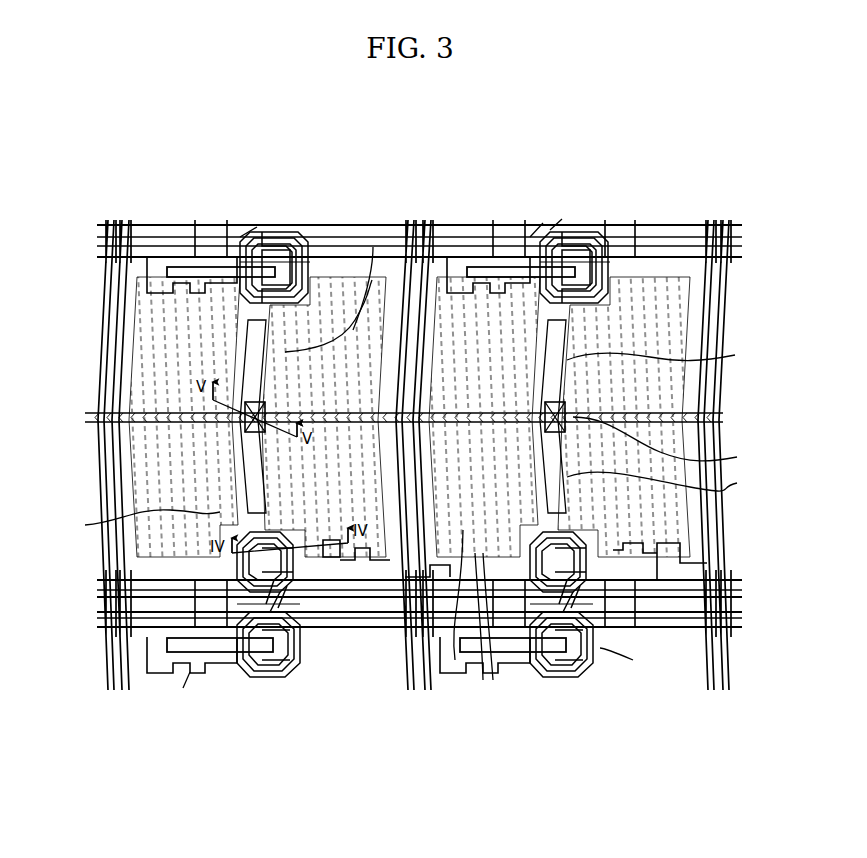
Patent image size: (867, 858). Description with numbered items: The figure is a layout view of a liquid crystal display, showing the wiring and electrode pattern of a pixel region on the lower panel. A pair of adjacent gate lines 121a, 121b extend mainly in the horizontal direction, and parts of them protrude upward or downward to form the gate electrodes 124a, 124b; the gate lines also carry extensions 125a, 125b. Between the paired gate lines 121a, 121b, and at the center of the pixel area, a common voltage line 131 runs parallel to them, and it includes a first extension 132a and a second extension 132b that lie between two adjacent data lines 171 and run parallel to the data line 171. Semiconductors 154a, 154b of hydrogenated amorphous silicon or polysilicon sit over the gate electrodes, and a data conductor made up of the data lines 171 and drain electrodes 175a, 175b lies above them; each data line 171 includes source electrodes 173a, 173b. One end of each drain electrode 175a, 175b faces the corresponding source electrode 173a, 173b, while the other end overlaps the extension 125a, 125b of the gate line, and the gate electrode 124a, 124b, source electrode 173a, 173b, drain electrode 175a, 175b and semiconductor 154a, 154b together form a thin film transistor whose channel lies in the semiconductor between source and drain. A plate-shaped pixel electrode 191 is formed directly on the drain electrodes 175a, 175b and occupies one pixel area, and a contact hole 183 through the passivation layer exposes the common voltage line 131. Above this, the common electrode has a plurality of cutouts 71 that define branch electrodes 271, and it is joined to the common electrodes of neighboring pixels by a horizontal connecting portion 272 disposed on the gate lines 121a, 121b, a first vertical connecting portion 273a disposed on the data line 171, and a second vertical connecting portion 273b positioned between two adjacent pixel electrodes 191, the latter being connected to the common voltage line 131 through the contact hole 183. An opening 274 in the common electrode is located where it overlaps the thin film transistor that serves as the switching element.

The cutout 71 is at (493, 680).
The gate line 121a is at (143, 240).
The gate line 121b is at (152, 582).
The gate electrode 124a is at (328, 275).
The gate electrode 124b is at (229, 680).
The extension 125a is at (187, 257).
The extension 125b is at (388, 545).
The common voltage line 131 is at (723, 418).
The first extension 132a is at (735, 355).
The second extension 132b is at (737, 483).
The semiconductor 154a is at (250, 253).
The semiconductor 154b is at (262, 665).
The data line 171 is at (108, 287).
The source electrode 173a is at (330, 235).
The source electrode 173b is at (308, 675).
The drain electrode 175a is at (143, 280).
The drain electrode 175b is at (343, 680).
The contact hole 183 is at (737, 457).
The pixel electrode 191 is at (232, 277).
The branch electrode 271 is at (137, 524).
The horizontal connecting portion 272 is at (183, 688).
The first vertical connecting portion 273a is at (455, 660).
The second vertical connecting portion 273b is at (373, 247).
The opening 274 is at (633, 660).